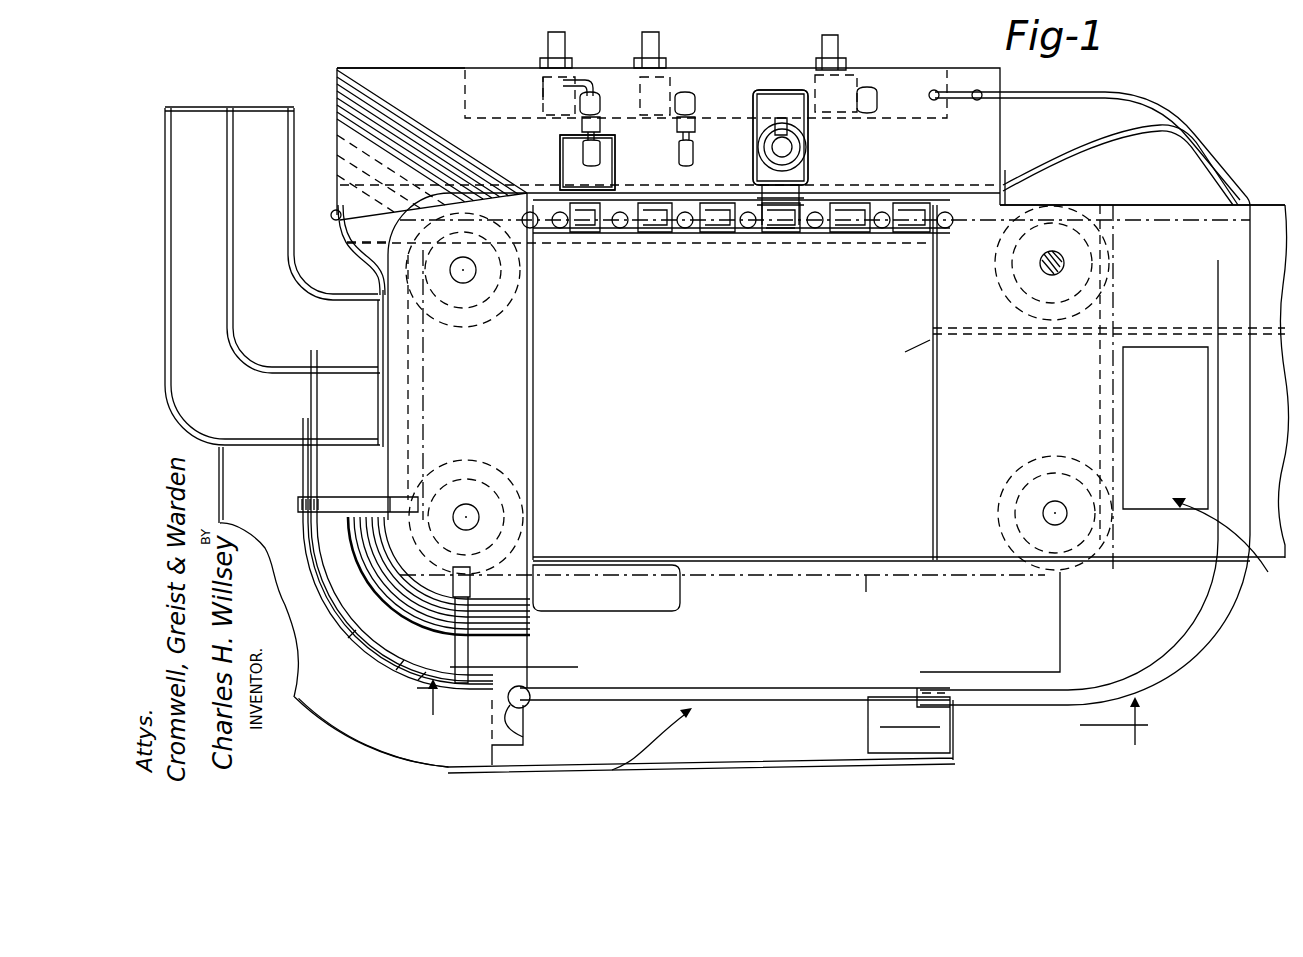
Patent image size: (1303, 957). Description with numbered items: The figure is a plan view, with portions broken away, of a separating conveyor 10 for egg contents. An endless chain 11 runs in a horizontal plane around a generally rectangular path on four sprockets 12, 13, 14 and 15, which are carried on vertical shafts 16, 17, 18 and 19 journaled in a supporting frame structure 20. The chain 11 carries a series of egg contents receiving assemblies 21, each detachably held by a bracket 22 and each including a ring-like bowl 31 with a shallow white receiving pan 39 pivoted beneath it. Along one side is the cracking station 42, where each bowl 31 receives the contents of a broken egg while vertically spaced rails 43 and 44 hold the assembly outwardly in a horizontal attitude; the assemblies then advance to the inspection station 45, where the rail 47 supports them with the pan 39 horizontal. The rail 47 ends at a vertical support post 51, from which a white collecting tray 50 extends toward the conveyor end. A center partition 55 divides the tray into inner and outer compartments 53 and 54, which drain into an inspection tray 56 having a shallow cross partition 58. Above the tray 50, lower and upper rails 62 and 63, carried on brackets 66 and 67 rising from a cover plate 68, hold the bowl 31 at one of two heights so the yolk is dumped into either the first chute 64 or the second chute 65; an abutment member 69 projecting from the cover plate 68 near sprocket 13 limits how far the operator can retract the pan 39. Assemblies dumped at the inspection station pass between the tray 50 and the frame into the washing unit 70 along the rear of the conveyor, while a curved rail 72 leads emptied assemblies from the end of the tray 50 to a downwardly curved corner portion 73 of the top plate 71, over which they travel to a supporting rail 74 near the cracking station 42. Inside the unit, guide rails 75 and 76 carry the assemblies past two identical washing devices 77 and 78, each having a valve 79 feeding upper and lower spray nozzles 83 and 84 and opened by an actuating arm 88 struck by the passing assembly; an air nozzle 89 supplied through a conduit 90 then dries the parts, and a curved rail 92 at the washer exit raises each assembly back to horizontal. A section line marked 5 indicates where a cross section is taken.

The section line 5- 5 is at (783, 718).
The conveyor 10 is at (1102, 396).
The endless chain 11 is at (879, 590).
The sprocket 12 is at (1018, 478).
The sprocket 13 is at (472, 466).
The sprocket 14 is at (503, 299).
The sprocket 15 is at (1008, 281).
The vertically extending shaft 16 is at (1044, 512).
The vertically extending shaft 17 is at (470, 508).
The vertically extending shaft 18 is at (450, 283).
The vertically extending shaft 19 is at (1038, 276).
The supporting frame structure 20 is at (1134, 206).
The egg contents receiving assembly 21 is at (558, 162).
The bracket 22 is at (667, 228).
The bowl-like member 31 is at (757, 147).
The white receiving pan 39 is at (770, 88).
The cracking station 42 is at (1203, 467).
The supporting rod or rail 43 is at (1180, 614).
The supporting rod or rail 44 is at (1222, 628).
The inspection station 45 is at (592, 742).
The rail 47 is at (740, 700).
The white collecting pan or tray 50 is at (330, 706).
The vertical support member 51 is at (530, 698).
The inner compartment 53 is at (345, 640).
The outer compartment 54 is at (370, 735).
The center partition member 55 is at (357, 662).
The inspection tray 56 is at (728, 757).
The shallow cross partition 58 is at (868, 714).
The lower supporting rail 62 is at (531, 724).
The upper supporting rail 63 is at (562, 666).
The egg yolk receiving chute 64 is at (172, 340).
The egg yolk receiving chute 65 is at (272, 107).
The bracket 66 is at (462, 690).
The bracket 67 is at (360, 496).
The cover plate 68 is at (527, 418).
The abutment member 69 is at (680, 585).
The washing unit 70 is at (425, 69).
The top plate 71 is at (368, 75).
The curved rail 72 is at (348, 265).
The downwardly curved corner portion 73 is at (348, 152).
The supporting rail 74 is at (1122, 92).
The guide rail 75 is at (722, 188).
The guide rail 76 is at (507, 120).
The washing device 77 is at (545, 92).
The washing device 78 is at (648, 98).
The valve 79 is at (640, 80).
The upper spray nozzle 83 is at (578, 120).
The lower spray nozzle 84 is at (615, 162).
The actuating arm 88 is at (592, 112).
The air nozzle 89 is at (870, 110).
The conduit 90 is at (840, 48).
The curved rail 92 is at (1070, 148).